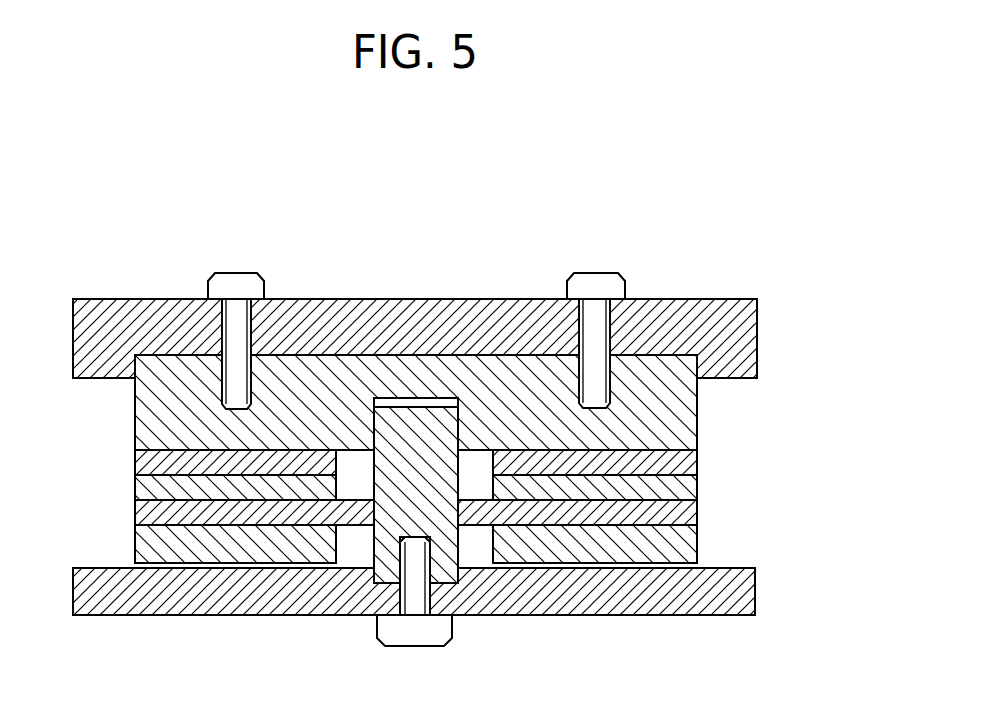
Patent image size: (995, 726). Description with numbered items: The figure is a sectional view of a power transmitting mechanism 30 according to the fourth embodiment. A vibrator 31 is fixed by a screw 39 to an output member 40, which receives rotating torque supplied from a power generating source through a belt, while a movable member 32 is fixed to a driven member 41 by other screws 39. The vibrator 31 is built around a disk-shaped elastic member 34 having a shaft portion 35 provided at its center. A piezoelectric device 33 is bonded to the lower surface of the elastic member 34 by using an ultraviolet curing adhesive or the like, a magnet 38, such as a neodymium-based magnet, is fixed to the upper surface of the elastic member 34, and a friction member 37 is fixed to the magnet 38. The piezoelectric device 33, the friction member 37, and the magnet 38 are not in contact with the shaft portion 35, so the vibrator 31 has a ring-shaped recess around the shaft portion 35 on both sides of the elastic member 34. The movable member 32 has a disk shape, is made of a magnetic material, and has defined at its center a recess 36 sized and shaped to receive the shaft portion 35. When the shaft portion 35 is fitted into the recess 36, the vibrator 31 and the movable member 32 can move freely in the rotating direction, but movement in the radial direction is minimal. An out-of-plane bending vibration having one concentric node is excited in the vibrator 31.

The power transmitting mechanism 30 is at (140, 279).
The vibrator 31 is at (481, 504).
The movable member 32 is at (697, 413).
The piezoelectric device 33 is at (448, 546).
The elastic member 34 is at (697, 515).
The shaft portion 35 is at (445, 528).
The recess 36 is at (433, 378).
The friction member 37 is at (697, 463).
The magnet 38 is at (697, 490).
The screw 39 is at (238, 283).
The output member 40 is at (752, 582).
The driven member 41 is at (751, 336).